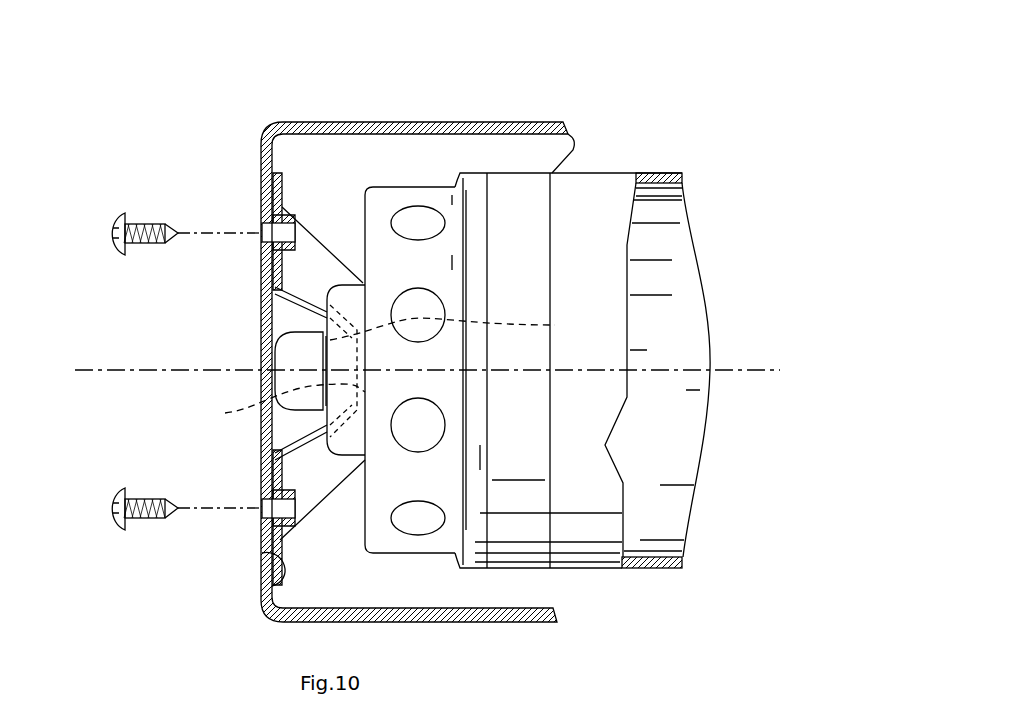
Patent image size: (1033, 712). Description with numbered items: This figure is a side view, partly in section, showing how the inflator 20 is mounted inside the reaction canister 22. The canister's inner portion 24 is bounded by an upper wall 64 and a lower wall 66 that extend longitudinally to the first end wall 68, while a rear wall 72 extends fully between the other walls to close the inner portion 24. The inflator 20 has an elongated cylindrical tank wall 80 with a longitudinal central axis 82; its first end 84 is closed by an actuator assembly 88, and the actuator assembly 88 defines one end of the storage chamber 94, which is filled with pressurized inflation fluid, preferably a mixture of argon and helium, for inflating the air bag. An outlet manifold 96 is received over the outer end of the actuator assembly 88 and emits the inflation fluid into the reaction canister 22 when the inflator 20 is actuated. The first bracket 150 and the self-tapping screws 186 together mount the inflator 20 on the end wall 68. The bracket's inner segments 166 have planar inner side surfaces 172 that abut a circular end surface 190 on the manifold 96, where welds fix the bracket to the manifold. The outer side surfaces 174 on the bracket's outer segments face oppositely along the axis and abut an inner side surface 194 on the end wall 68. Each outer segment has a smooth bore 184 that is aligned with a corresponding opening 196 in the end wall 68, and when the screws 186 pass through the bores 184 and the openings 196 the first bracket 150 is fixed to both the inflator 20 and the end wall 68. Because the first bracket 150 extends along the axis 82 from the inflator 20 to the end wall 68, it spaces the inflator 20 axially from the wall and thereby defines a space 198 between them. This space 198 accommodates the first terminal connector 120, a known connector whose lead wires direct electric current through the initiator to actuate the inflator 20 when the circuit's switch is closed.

The inflator 20 is at (414, 367).
The reaction canister 22 is at (414, 337).
The inner portion 24 is at (414, 367).
The upper wall 64 is at (547, 130).
The lower wall 66 is at (505, 622).
The first end wall 68 is at (262, 160).
The rear wall 72 is at (556, 385).
The tank wall 80 is at (660, 175).
The longitudinal central axis 82 is at (728, 370).
The first end 84 is at (567, 389).
The actuator assembly 88 is at (552, 503).
The storage chamber 94 is at (659, 354).
The outlet manifold 96 is at (556, 419).
The first terminal connector 120 is at (262, 328).
The first bracket 150 is at (298, 190).
The inner segments 166 is at (270, 402).
The inner side surfaces 172 is at (550, 320).
The outer side surfaces 174 is at (262, 525).
The smooth bore 184 is at (306, 243).
The self-tapping screw 186 is at (112, 230).
The circular end surface 190 is at (361, 205).
The inner side surface 194 is at (262, 553).
The openings 196 is at (260, 226).
The space 198 is at (281, 304).